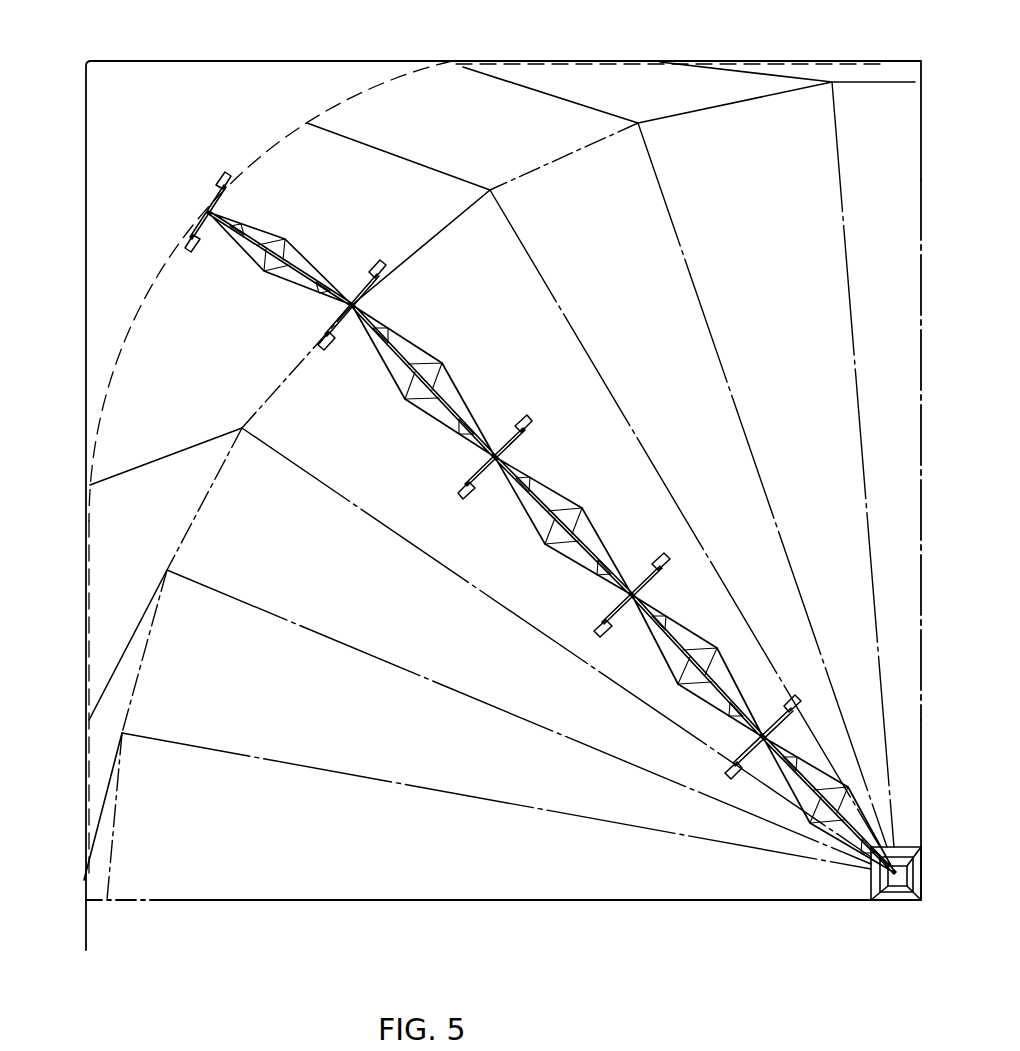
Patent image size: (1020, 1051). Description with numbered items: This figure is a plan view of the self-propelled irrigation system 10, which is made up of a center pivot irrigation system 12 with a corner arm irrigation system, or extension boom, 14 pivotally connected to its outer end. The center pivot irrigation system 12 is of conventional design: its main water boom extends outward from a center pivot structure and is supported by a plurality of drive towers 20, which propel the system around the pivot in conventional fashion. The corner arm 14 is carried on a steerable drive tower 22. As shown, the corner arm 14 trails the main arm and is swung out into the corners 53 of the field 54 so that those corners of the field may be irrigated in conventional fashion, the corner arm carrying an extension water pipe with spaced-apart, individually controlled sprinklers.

The self-propelled irrigation system 10 is at (535, 563).
The center pivot irrigation system 12 is at (845, 222).
The corner arm irrigation system 14 is at (512, 84).
The drive towers 20 is at (464, 468).
The steerable drive tower 22 is at (219, 251).
The corners 53 is at (197, 100).
The field 54 is at (84, 122).